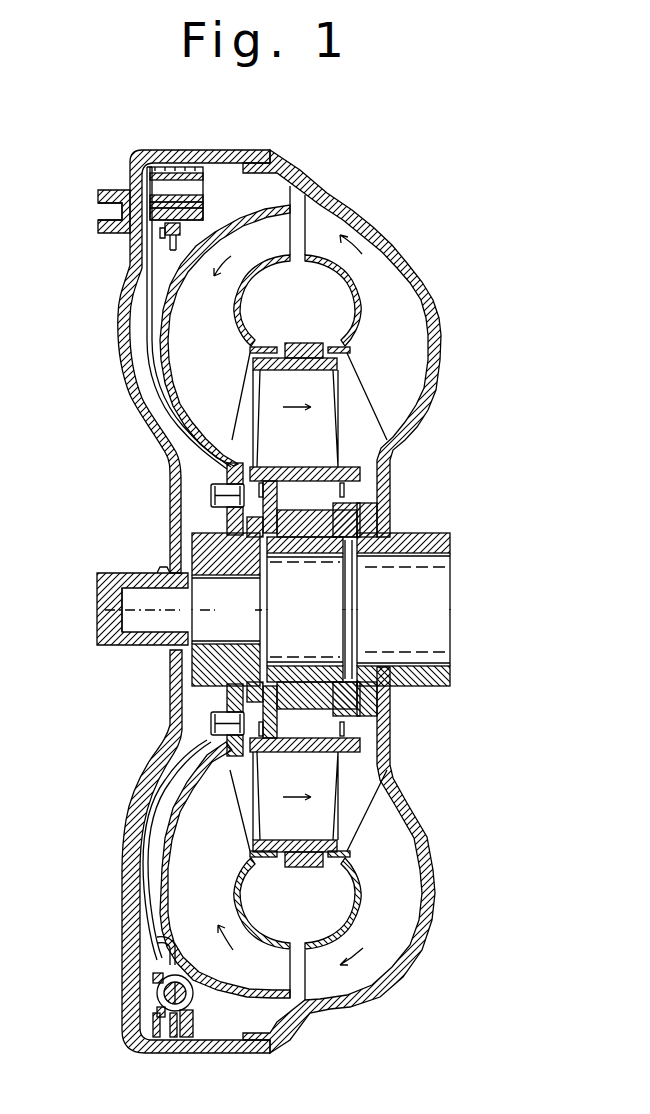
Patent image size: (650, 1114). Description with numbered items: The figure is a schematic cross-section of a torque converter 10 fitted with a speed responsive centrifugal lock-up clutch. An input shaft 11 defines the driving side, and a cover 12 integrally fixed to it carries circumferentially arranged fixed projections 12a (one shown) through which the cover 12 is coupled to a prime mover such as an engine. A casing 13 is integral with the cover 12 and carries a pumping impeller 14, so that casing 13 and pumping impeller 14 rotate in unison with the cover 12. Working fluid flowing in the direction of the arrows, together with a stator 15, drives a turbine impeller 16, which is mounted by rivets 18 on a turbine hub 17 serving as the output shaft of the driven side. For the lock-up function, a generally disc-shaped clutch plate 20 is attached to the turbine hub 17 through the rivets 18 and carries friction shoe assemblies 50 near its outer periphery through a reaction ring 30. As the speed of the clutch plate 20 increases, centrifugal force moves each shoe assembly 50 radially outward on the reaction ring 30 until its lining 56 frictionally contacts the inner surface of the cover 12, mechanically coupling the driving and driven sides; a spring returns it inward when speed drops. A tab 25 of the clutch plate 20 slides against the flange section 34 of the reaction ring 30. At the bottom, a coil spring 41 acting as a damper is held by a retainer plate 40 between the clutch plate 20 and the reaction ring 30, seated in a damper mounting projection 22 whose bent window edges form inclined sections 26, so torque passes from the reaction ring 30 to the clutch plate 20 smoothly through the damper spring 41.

The torque converter 10 is at (431, 217).
The input shaft 11 is at (97, 572).
The cover 12 is at (127, 358).
The fixed projection 12a is at (116, 188).
The casing 13 is at (438, 297).
The pumping impeller 14 is at (408, 353).
The stator 15 is at (318, 448).
The turbine impeller 16 is at (218, 325).
The turbine hub 17 is at (277, 609).
The rivets 18 is at (212, 500).
The clutch plate 20 is at (150, 394).
The damper mounting projection 22 is at (157, 1030).
The tab 25 is at (157, 271).
The inclined sections 26 is at (157, 1013).
The reaction ring 30 is at (176, 236).
The flange section 34 is at (167, 940).
The retainer plate 40 is at (190, 1032).
The coil spring 41 is at (193, 997).
The friction shoe assembly 50 is at (223, 184).
The lining 56 is at (186, 168).